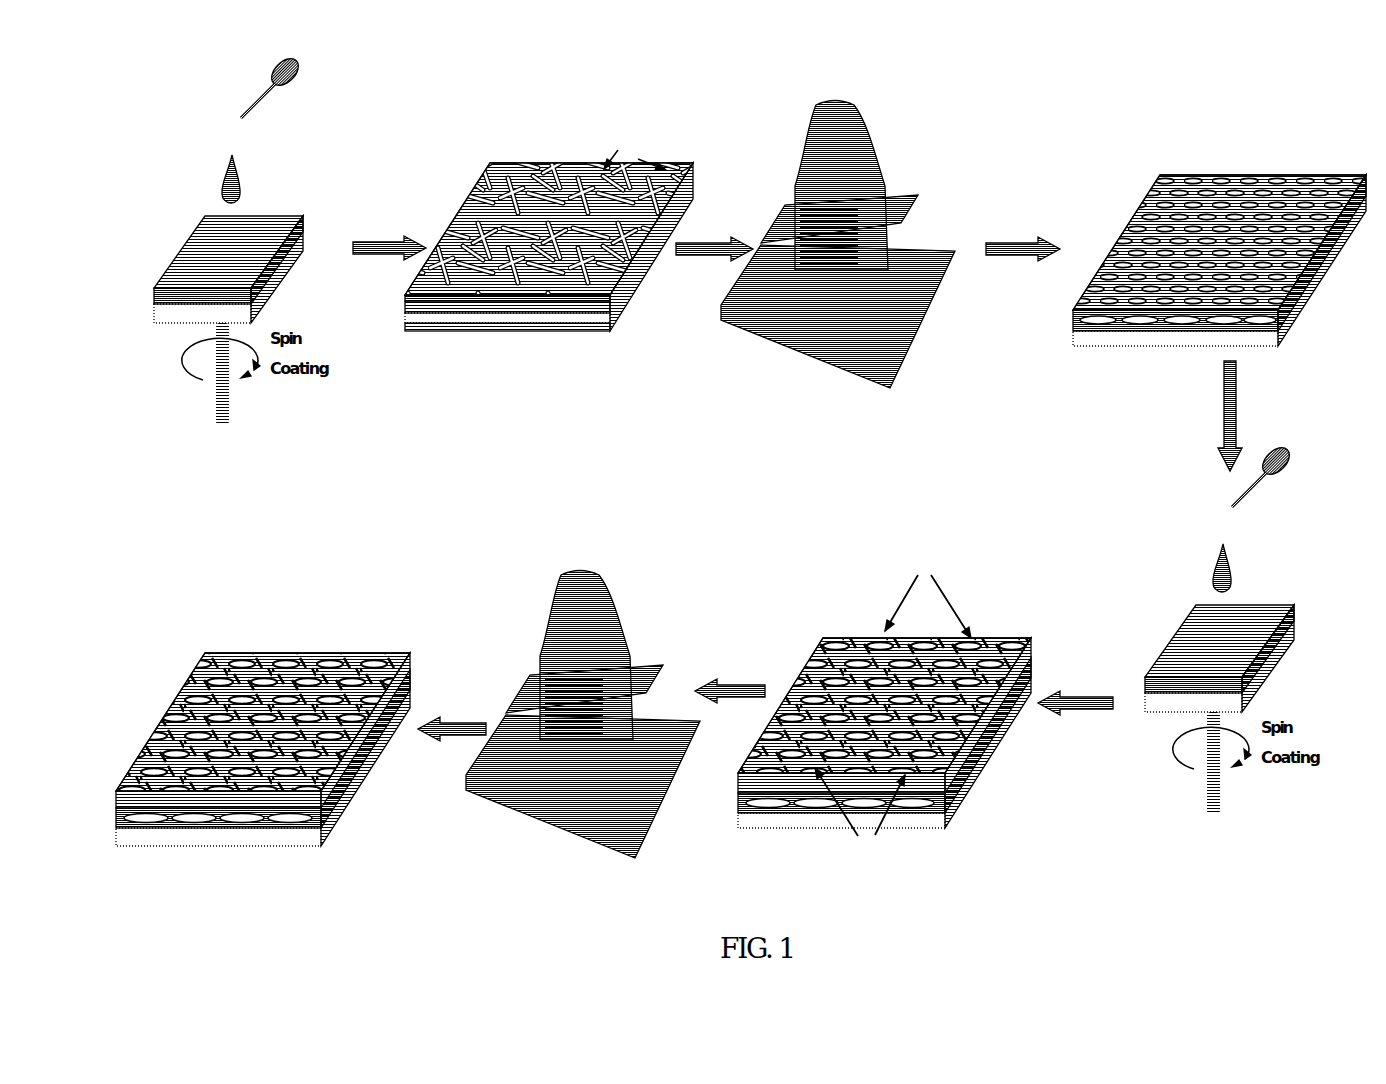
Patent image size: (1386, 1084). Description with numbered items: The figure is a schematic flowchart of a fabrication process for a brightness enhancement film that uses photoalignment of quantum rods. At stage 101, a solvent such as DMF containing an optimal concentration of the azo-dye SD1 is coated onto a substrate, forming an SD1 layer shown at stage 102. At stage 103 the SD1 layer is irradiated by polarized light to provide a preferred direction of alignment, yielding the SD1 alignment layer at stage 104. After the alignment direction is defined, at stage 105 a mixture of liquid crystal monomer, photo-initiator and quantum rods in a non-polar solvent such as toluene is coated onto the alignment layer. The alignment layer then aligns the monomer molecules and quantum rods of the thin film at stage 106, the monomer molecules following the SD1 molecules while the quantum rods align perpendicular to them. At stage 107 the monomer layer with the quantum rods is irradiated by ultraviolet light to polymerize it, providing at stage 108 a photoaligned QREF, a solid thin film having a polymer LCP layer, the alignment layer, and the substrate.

The stage of coating azo-dye solvent onto substrate 101 is at (242, 260).
The stage of formed SD1 layer 102 is at (549, 250).
The stage of polarized light irradiation 103 is at (838, 260).
The stage of formed SD1 alignment layer 104 is at (1219, 266).
The stage of coating monomer, photo-initiator and QR mixture 105 is at (1233, 649).
The stage of aligned monomer and QR thin film 106 is at (884, 723).
The stage of ultraviolet light irradiation 107 is at (583, 725).
The stage of photoaligned QREF solid thin film 108 is at (263, 768).